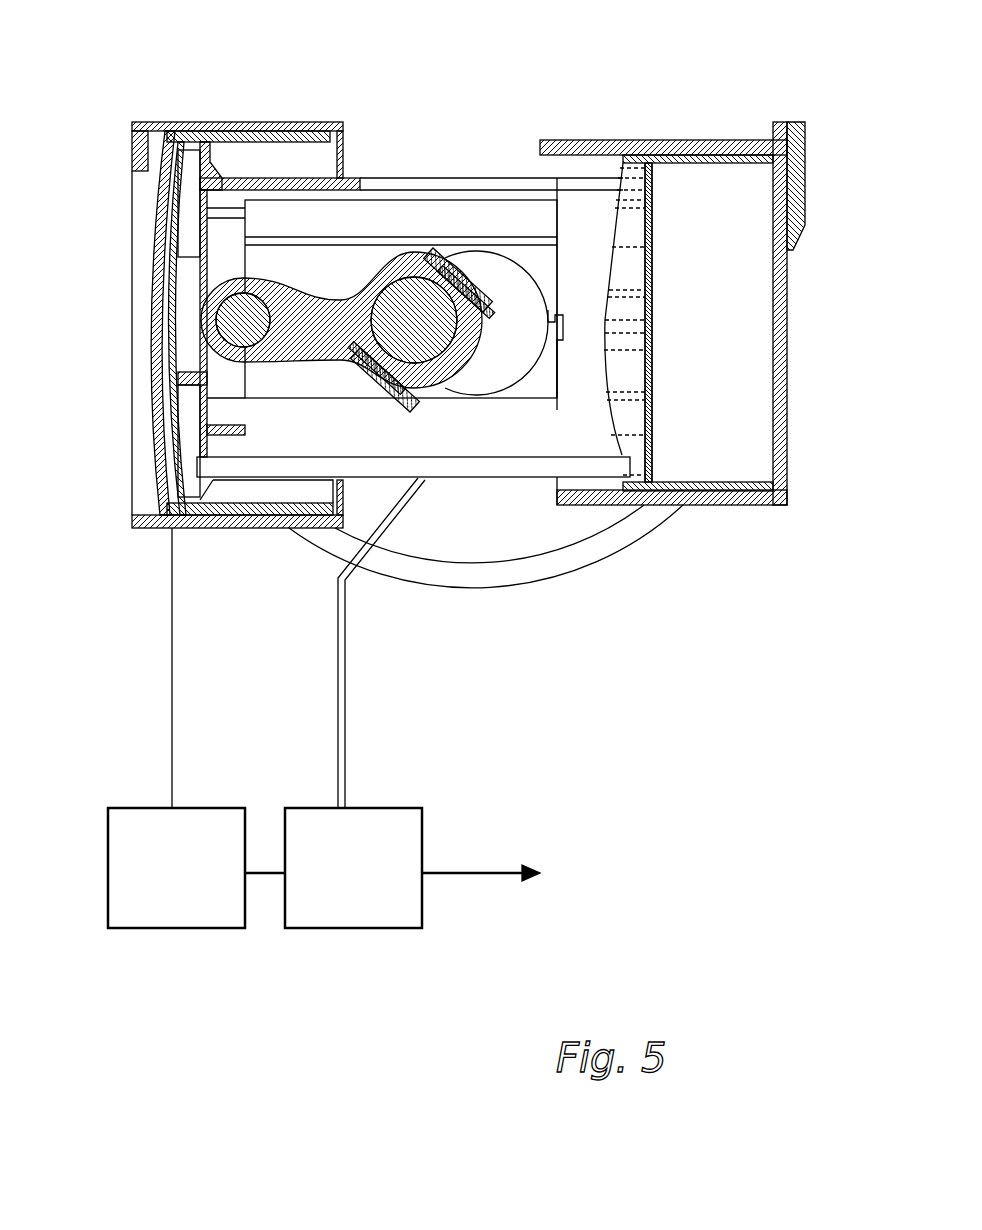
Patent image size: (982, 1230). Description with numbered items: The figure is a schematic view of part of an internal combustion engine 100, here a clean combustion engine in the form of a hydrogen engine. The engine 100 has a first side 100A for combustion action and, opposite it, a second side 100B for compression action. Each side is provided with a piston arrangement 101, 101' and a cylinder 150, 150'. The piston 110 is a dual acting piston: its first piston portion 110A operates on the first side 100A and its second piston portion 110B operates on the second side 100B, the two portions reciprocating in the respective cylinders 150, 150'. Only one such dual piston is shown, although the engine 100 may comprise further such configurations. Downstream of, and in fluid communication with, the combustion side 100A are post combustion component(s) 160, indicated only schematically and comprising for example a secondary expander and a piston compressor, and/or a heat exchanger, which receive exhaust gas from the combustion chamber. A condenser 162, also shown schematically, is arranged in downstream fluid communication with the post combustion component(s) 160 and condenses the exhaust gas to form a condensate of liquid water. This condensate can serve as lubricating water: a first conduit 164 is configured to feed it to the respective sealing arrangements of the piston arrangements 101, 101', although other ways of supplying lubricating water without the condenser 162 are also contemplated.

The internal combustion engine 100 is at (753, 565).
The first side 100A is at (166, 92).
The second side 100B is at (732, 92).
The piston arrangement 101 is at (206, 361).
The piston arrangement 101' is at (698, 541).
The piston 110 is at (458, 432).
The first piston portion 110A is at (300, 430).
The second piston portion 110B is at (583, 425).
The cylinder 150 is at (248, 113).
The cylinder 150' is at (659, 108).
The post combustion component(s) 160 is at (183, 930).
The condenser 162 is at (348, 930).
The first conduit 164 is at (338, 790).